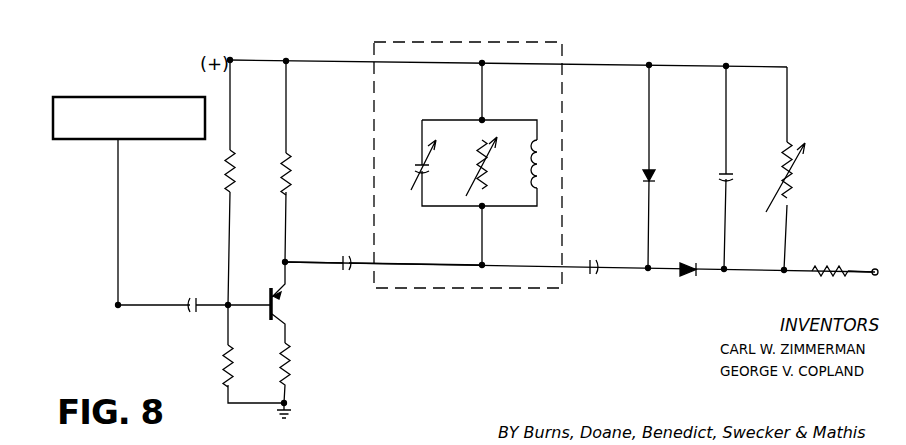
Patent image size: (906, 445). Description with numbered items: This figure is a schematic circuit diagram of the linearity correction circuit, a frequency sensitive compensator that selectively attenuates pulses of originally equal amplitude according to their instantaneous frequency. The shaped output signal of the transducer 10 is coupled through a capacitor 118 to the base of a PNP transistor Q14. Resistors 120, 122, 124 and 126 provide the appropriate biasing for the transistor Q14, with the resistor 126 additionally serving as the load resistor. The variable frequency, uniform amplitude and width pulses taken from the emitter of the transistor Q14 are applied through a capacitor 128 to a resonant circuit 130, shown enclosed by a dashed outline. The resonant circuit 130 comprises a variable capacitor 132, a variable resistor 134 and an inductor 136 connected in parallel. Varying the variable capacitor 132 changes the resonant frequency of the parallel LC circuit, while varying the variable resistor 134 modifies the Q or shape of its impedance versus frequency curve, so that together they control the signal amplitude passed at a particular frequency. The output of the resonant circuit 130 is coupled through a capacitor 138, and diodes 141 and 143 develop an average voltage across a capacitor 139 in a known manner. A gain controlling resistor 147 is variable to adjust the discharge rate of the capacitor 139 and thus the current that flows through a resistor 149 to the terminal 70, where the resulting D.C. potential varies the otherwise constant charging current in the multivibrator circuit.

The transducer 10 is at (77, 131).
The resistor 120 is at (225, 169).
The resistor 126 is at (292, 160).
The capacitor 118 is at (193, 297).
The resistor 122 is at (224, 361).
The resistor 124 is at (288, 360).
The PNP transistor Q14 is at (281, 303).
The capacitor 128 is at (346, 272).
The resonant circuit 130 is at (514, 286).
The variable capacitor 132 is at (418, 164).
The variable resistor 134 is at (478, 160).
The inductor 136 is at (533, 158).
The capacitor 138 is at (598, 276).
The diode 141 is at (642, 178).
The capacitor 139 is at (721, 177).
The gain controlling resistor 147 is at (782, 165).
The diode 143 is at (691, 278).
The resistor 149 is at (826, 264).
The terminal 70 is at (875, 275).